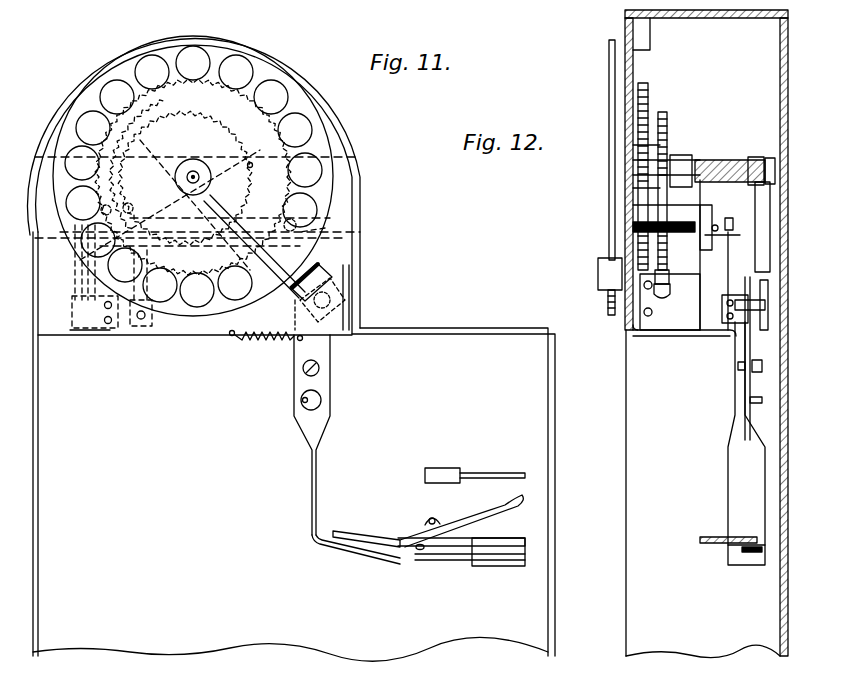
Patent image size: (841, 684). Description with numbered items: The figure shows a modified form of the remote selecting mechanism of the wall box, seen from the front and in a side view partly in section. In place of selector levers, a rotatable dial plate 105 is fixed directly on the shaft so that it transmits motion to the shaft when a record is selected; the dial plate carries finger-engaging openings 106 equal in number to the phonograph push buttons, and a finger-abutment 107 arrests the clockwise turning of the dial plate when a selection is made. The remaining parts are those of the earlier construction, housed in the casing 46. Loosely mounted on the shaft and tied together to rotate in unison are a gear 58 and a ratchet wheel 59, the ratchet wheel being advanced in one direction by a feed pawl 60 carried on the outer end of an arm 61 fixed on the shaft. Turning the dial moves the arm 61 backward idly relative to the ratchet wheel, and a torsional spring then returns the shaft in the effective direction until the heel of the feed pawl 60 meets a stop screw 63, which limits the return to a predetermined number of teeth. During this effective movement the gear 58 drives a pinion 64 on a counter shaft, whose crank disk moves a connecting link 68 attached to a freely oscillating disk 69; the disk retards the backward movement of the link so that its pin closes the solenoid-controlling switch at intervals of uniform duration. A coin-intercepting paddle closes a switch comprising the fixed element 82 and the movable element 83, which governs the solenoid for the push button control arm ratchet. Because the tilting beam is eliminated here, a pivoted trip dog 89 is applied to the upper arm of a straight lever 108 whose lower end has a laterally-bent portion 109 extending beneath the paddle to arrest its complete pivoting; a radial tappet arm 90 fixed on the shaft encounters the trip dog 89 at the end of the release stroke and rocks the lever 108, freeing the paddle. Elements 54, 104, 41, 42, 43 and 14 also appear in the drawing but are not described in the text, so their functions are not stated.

In FIG. 11, the dial plate 105 is at (361, 175).
In FIG. 12, the dial plate 105 is at (608, 58).
In FIG. 11, the finger-engaging openings 106 is at (250, 62).
In FIG. 11, the gear 58 is at (193, 177).
In FIG. 12, the gear 58 is at (649, 88).
In FIG. 11, the ratchet wheel 59 is at (185, 169).
In FIG. 12, the ratchet wheel 59 is at (668, 122).
In FIG. 11, the oscillating disk 69 is at (137, 164).
In FIG. 12, the oscillating disk 69 is at (722, 160).
In FIG. 11, the shaft 54 is at (214, 177).
In FIG. 12, the shaft 54 is at (637, 187).
In FIG. 11, the arm 61 is at (195, 205).
In FIG. 12, the arm 61 is at (640, 205).
In FIG. 11, the feed pawl 60 is at (198, 231).
In FIG. 11, the tappet arm 90 is at (254, 246).
In FIG. 12, the tappet arm 90 is at (771, 235).
In FIG. 11, the bar 104 is at (330, 249).
In FIG. 11, the pinion 64 is at (325, 228).
In FIG. 12, the pinion 64 is at (704, 252).
In FIG. 11, the trip dog 89 is at (350, 306).
In FIG. 12, the trip dog 89 is at (768, 330).
In FIG. 11, the contact assembly 41 is at (75, 258).
In FIG. 11, the casing 46 is at (294, 446).
In FIG. 12, the casing 46 is at (703, 491).
In FIG. 11, the straight lever 108 is at (331, 389).
In FIG. 12, the straight lever 108 is at (740, 340).
In FIG. 11, the laterally-bent portion 109 is at (372, 562).
In FIG. 12, the laterally-bent portion 109 is at (742, 568).
In FIG. 11, the contact blade 42 is at (429, 529).
In FIG. 12, the contact blade 42 is at (719, 527).
In FIG. 11, the contact lever 43 is at (515, 507).
In FIG. 11, the switch element 83 is at (413, 548).
In FIG. 11, the fixed switch element 82 is at (450, 562).
In FIG. 11, the contact 14 is at (505, 472).
In FIG. 12, the finger-abutment 107 is at (600, 255).
In FIG. 12, the connecting link 68 is at (730, 222).
In FIG. 12, the stop screw 63 is at (670, 300).